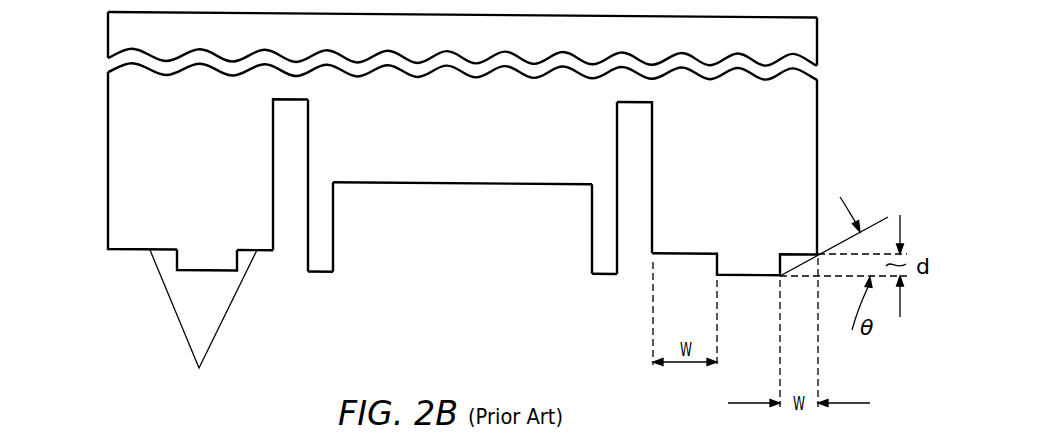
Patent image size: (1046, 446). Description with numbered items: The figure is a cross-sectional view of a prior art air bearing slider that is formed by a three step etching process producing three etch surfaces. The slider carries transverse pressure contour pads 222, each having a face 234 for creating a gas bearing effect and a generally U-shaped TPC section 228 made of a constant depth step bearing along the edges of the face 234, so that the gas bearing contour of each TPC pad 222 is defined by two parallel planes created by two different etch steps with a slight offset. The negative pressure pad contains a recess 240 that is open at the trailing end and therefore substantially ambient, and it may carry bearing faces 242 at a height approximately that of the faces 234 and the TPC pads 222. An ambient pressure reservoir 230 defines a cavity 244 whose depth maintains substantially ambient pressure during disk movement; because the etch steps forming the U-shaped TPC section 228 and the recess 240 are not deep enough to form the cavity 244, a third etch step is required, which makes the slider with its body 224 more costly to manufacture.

The transverse pressure contour (TPC) pad 222 is at (127, 273).
The shingle body / top layer 224 is at (818, 113).
The U-shaped TPC section 228 is at (203, 325).
The ambient pressure reservoir 230 is at (289, 254).
The face 234 is at (200, 270).
The recess 240 is at (492, 184).
The bearing face 242 is at (320, 272).
The cavity 244 is at (295, 206).